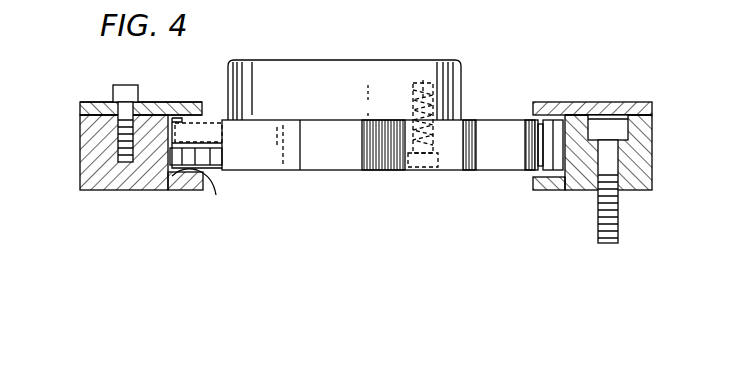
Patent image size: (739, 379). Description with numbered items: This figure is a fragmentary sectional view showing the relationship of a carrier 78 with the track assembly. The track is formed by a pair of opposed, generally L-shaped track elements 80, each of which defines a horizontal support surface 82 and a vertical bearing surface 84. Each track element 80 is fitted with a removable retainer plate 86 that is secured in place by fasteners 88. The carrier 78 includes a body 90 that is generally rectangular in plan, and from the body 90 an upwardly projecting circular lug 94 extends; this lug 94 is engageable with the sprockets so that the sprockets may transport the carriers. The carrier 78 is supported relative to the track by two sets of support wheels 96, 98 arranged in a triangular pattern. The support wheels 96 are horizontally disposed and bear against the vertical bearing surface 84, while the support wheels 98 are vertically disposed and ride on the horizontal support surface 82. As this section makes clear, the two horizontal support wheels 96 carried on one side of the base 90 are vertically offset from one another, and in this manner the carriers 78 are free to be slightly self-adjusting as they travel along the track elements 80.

The carrier 78 is at (503, 112).
The track element 80 is at (90, 157).
The horizontal support surface 82 is at (200, 172).
The vertical bearing surface 84 is at (178, 175).
The retainer plate 86 is at (162, 100).
The fastener 88 is at (118, 95).
The body 90 is at (497, 163).
The circular lug 94 is at (462, 74).
The support wheel 96 is at (170, 150).
The support wheel 98 is at (556, 178).